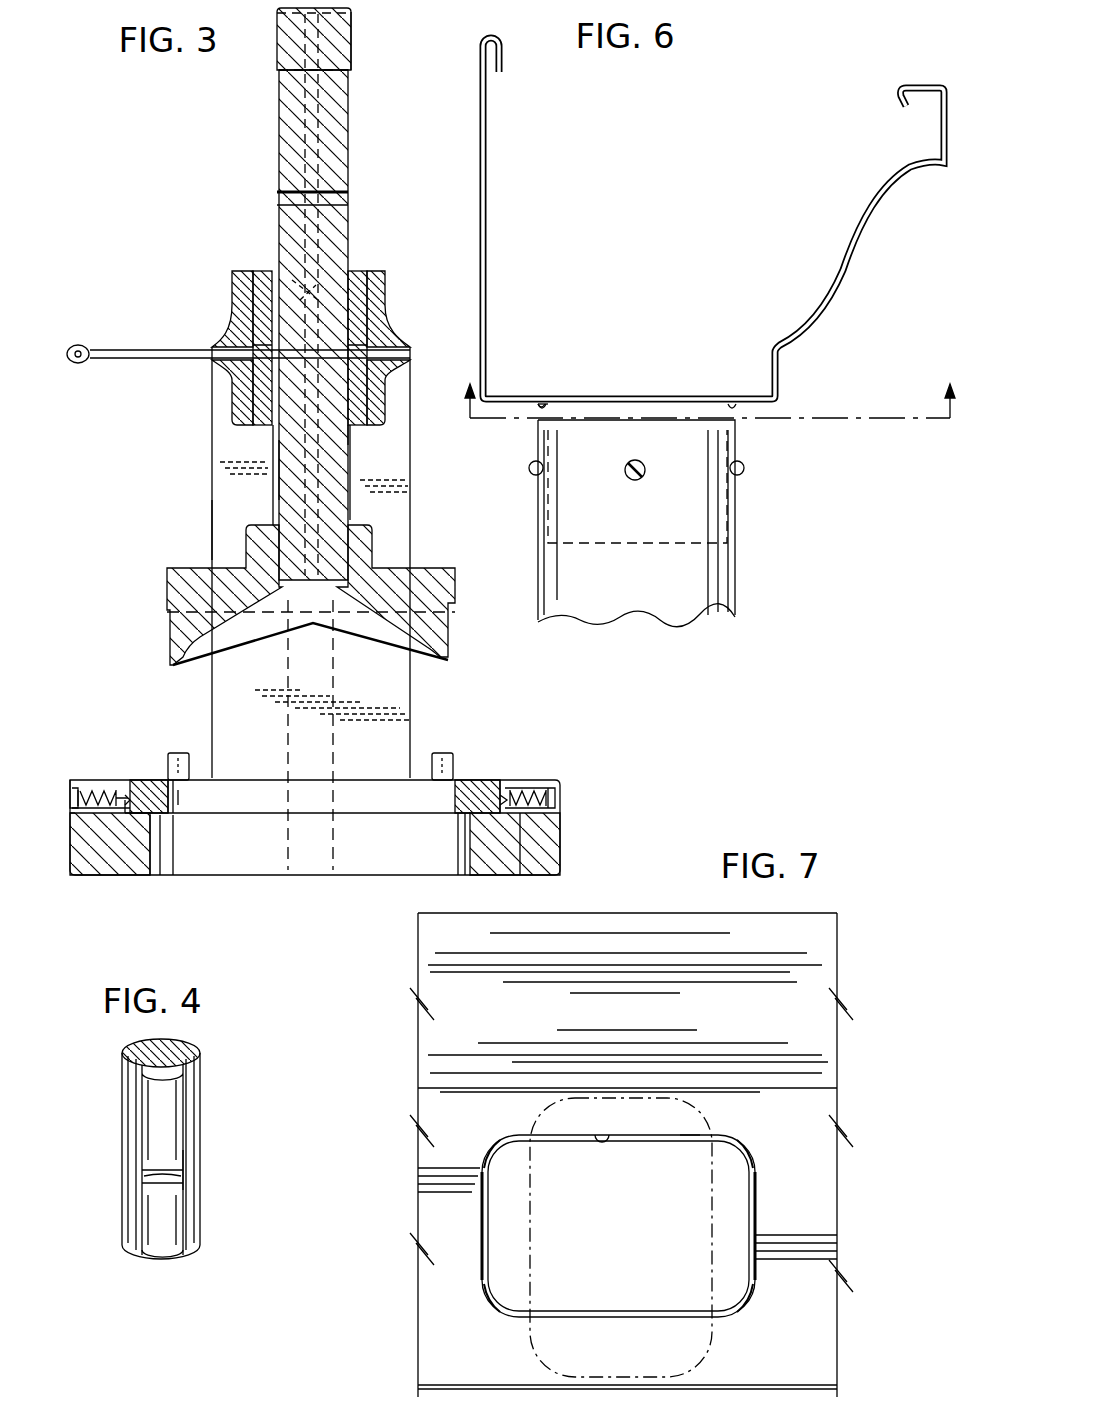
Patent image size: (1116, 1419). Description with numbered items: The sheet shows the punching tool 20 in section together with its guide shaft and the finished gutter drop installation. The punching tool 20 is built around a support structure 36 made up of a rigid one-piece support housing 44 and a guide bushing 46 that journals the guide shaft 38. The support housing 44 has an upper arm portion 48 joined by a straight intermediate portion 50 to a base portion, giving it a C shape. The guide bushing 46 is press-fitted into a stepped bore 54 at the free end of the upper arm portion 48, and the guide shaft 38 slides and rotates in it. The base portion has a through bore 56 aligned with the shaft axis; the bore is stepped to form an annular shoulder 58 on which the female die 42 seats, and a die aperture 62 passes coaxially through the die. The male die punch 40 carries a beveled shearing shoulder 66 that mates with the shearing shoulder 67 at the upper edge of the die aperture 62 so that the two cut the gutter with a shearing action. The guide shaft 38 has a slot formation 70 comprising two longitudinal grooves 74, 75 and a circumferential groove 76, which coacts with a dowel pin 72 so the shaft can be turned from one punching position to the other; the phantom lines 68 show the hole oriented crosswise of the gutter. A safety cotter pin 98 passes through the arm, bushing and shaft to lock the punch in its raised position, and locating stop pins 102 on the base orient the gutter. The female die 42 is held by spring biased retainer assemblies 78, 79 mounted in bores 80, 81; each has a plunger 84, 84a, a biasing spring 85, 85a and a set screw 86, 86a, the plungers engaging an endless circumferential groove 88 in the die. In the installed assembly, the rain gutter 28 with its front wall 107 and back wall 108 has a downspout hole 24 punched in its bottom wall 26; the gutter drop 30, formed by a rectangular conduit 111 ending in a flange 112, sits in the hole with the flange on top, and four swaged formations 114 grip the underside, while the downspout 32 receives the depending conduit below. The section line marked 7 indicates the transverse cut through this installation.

In FIG. 3, the punching tool 20 is at (350, 82).
In FIG. 6, the downspout hole 24 is at (545, 400).
In FIG. 7, the downspout hole 24 is at (600, 1134).
In FIG. 6, the bottom wall 26 is at (498, 397).
In FIG. 7, the bottom wall 26 is at (788, 1212).
In FIG. 6, the rain gutter 28 is at (862, 256).
In FIG. 7, the rain gutter 28 is at (820, 992).
In FIG. 6, the gutter drop 30 is at (702, 432).
In FIG. 7, the gutter drop 30 is at (700, 1318).
In FIG. 6, the downspout 32 is at (540, 577).
In FIG. 3, the support structure 36 is at (398, 330).
In FIG. 3, the guide shaft 38 is at (350, 142).
In FIG. 4, the guide shaft 38 is at (122, 1105).
In FIG. 3, the male die punch 40 is at (167, 592).
In FIG. 3, the female die 42 is at (478, 780).
In FIG. 3, the support housing 44 is at (210, 470).
In FIG. 3, the guide bushing 46 is at (253, 270).
In FIG. 3, the upper arm portion 48 is at (385, 272).
In FIG. 3, the intermediate portion 50 is at (211, 522).
In FIG. 3, the stepped bore 54 is at (262, 350).
In FIG. 3, the through bore 56 is at (130, 875).
In FIG. 3, the annular shoulder 58 is at (150, 815).
In FIG. 3, the die aperture 62 is at (185, 802).
In FIG. 3, the shearing shoulder 66 is at (170, 630).
In FIG. 3, the shearing shoulder 67 is at (170, 782).
In FIG. 7, the phantom lines 68 is at (528, 1196).
In FIG. 3, the slot formation 70 is at (278, 460).
In FIG. 4, the slot formation 70 is at (190, 1172).
In FIG. 3, the dowel pin 72 is at (346, 262).
In FIG. 3, the longitudinal groove 74 is at (305, 44).
In FIG. 4, the longitudinal groove 74 is at (190, 1113).
In FIG. 3, the longitudinal groove 75 is at (278, 104).
In FIG. 4, the longitudinal groove 75 is at (140, 1150).
In FIG. 3, the circumferential groove 76 is at (355, 430).
In FIG. 4, the circumferential groove 76 is at (170, 1180).
In FIG. 3, the retainer assembly 78 is at (80, 782).
In FIG. 3, the retainer assembly 79 is at (558, 790).
In FIG. 3, the bore 80 is at (72, 812).
In FIG. 3, the bore 81 is at (540, 792).
In FIG. 3, the plunger 84 is at (135, 795).
In FIG. 3, the plunger 84a is at (470, 815).
In FIG. 3, the biasing spring 85 is at (100, 788).
In FIG. 3, the biasing spring 85a is at (528, 875).
In FIG. 3, the set screw 86 is at (74, 798).
In FIG. 3, the set screw 86a is at (556, 802).
In FIG. 3, the circumferential groove 88 is at (505, 790).
In FIG. 3, the safety cotter pin 98 is at (135, 350).
In FIG. 3, the locating stop pins 102 is at (178, 752).
In FIG. 6, the front wall 107 is at (940, 135).
In FIG. 7, the front wall 107 is at (790, 912).
In FIG. 6, the back wall 108 is at (488, 203).
In FIG. 7, the back wall 108 is at (822, 1387).
In FIG. 6, the rectangular conduit 111 is at (540, 440).
In FIG. 7, the rectangular conduit 111 is at (680, 1135).
In FIG. 6, the flange 112 is at (650, 395).
In FIG. 6, the swaged formations 114 is at (535, 420).
In FIG. 7, the swaged formations 114 is at (492, 1146).
In FIG. 6, the section line 7 is at (710, 415).